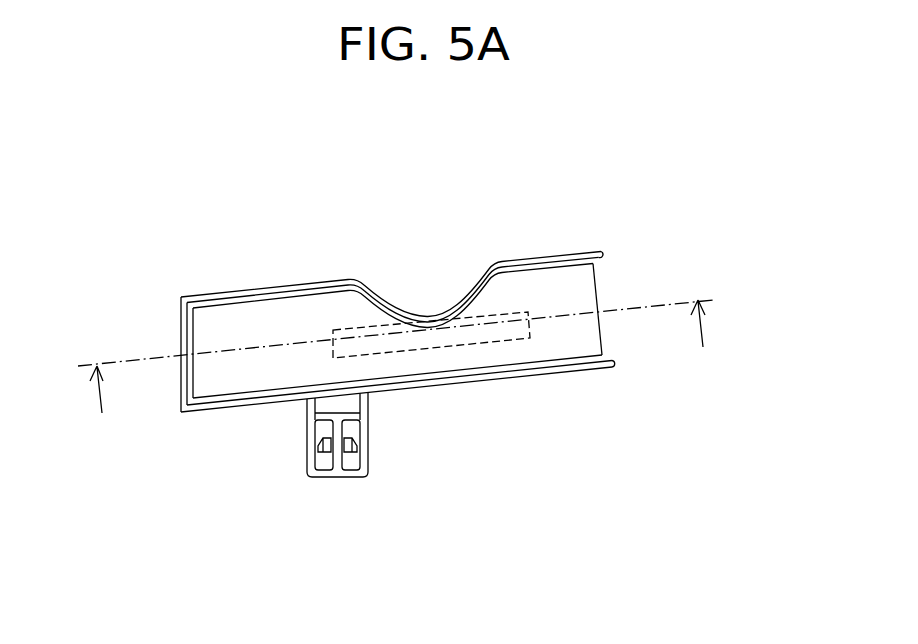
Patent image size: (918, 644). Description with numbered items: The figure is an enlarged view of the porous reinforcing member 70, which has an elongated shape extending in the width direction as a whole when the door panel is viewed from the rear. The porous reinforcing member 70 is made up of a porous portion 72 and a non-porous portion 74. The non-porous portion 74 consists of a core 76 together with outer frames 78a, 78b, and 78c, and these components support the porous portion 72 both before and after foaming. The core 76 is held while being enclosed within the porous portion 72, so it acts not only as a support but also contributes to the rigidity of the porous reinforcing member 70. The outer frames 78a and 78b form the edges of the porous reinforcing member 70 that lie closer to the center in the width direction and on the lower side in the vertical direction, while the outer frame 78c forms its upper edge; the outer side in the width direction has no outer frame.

The porous reinforcing member 70 is at (460, 217).
The porous portion 72 is at (553, 287).
The non-porous portion 74 is at (408, 176).
The core 76 is at (450, 337).
The outer frame 78a is at (181, 350).
The outer frame 78b is at (288, 401).
The outer frame 78c is at (372, 296).